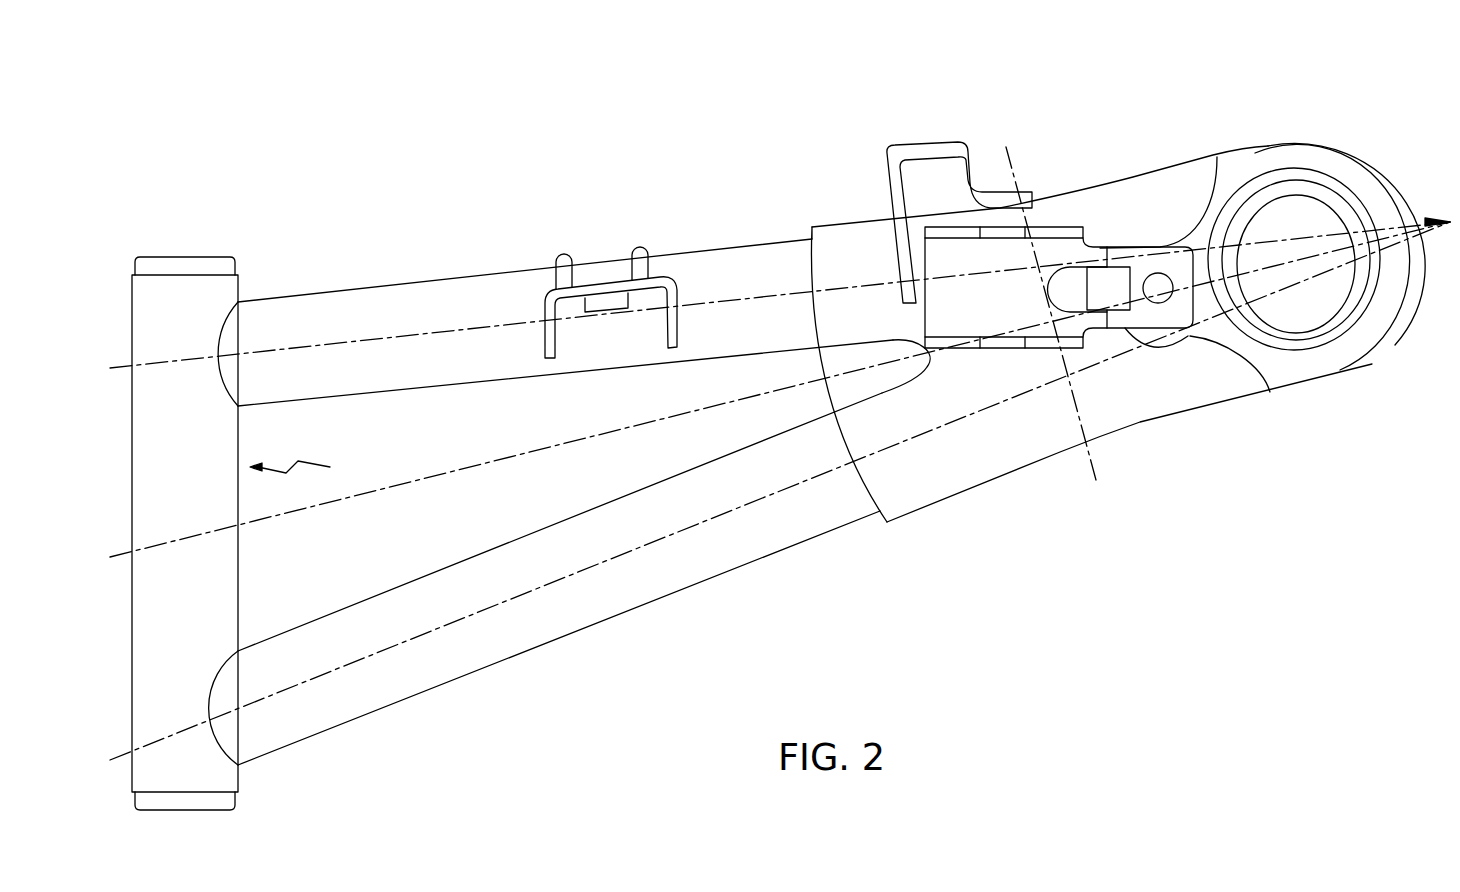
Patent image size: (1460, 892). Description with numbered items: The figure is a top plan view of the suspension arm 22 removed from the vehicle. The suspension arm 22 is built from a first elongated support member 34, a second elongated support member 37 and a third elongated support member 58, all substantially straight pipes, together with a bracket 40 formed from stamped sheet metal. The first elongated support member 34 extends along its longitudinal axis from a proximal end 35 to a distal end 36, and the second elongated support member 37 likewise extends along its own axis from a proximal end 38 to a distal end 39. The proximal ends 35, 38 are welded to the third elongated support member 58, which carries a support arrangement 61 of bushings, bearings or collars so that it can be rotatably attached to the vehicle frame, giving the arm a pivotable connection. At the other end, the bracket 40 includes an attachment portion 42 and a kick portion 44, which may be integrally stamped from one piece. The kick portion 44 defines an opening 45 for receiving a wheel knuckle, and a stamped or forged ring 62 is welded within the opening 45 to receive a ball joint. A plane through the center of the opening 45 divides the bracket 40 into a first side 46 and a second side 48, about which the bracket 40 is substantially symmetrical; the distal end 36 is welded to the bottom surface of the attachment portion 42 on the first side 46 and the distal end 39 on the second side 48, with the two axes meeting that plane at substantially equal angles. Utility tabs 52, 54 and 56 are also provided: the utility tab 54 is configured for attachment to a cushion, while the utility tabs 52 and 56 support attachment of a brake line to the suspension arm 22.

The suspension arm 22 is at (778, 452).
The first elongated support member 34 is at (555, 279).
The proximal end 35 is at (253, 299).
The distal end 36 is at (1088, 334).
The second elongated support member 37 is at (569, 604).
The proximal end 38 is at (253, 759).
The distal end 39 is at (1124, 498).
The bracket 40 is at (1110, 191).
The attachment portion 42 is at (1051, 362).
The kick portion 44 is at (1340, 312).
The opening 45 is at (1294, 230).
The first side 46 is at (1040, 131).
The second side 48 is at (1185, 342).
The utility tab 52 is at (611, 266).
The utility tab 54 is at (1004, 251).
The utility tab 56 is at (959, 200).
The third elongated support member 58 is at (303, 468).
The support arrangement 61 is at (185, 557).
The ring 62 is at (1296, 225).